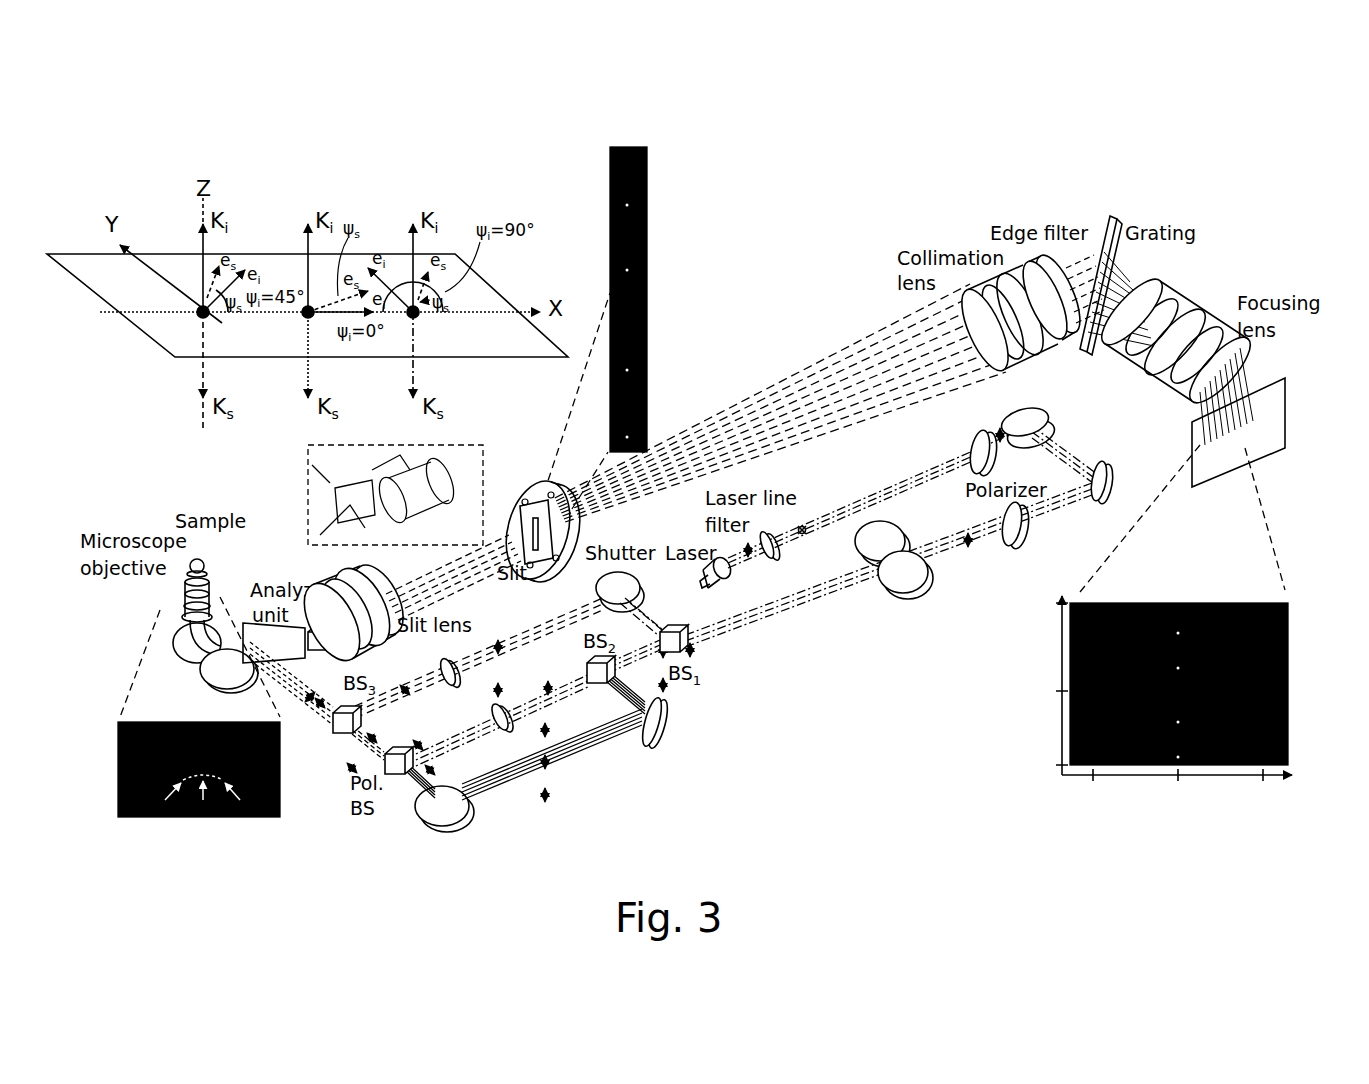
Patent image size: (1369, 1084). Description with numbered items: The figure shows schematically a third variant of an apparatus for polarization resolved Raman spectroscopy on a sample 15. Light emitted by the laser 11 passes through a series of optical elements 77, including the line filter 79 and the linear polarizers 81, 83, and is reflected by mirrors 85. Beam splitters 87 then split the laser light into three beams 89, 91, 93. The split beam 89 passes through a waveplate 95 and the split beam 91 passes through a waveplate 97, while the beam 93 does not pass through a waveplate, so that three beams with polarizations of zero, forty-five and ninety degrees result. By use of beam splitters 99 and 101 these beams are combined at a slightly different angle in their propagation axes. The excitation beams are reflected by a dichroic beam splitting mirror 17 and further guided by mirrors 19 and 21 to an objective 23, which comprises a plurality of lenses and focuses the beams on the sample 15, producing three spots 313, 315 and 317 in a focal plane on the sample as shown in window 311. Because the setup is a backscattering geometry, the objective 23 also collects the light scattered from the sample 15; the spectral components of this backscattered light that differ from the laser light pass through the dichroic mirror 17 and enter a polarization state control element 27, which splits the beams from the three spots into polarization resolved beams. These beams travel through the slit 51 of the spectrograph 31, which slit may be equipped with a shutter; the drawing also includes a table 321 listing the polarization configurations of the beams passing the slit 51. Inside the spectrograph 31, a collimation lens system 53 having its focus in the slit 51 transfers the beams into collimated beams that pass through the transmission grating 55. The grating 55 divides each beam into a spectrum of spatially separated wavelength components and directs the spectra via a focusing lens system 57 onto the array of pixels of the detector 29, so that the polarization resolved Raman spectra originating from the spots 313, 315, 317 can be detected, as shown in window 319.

The light source 11 is at (727, 588).
The sample 15 is at (194, 557).
The dichroic beam splitting mirror 17 is at (245, 623).
The mirror 19 is at (215, 672).
The mirror 21 is at (175, 643).
The objective 23 is at (180, 575).
The polarization state control element 27 is at (284, 568).
The detector 29 is at (1288, 405).
The spectrograph 31 is at (1063, 212).
The slit 51 is at (514, 460).
The collimation lens system 53 is at (975, 238).
The transmission grating 55 is at (1115, 212).
The focusing lens system 57 is at (1202, 295).
The optical element 77 is at (772, 562).
The line filter 79 is at (808, 527).
The linear polarizer 81 is at (972, 434).
The linear polarizer 83 is at (1020, 547).
The mirror 85 is at (1040, 414).
The beam splitter 87 is at (648, 740).
The split beam 89 is at (506, 645).
The split beam 91 is at (500, 700).
The split beam 93 is at (575, 760).
The waveplate 95 is at (451, 658).
The waveplate 97 is at (492, 712).
The beam splitter 99 is at (395, 780).
The beam splitter 101 is at (332, 738).
The window 311 is at (200, 840).
The spot 313 is at (118, 752).
The spot 315 is at (243, 822).
The spot 317 is at (178, 822).
The window 319 is at (1299, 702).
The polarization configuration table 321 is at (627, 147).